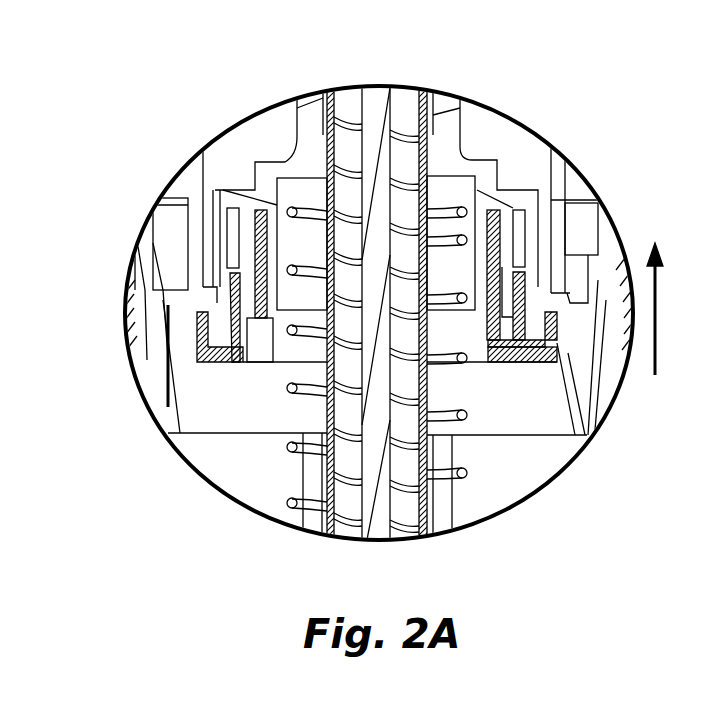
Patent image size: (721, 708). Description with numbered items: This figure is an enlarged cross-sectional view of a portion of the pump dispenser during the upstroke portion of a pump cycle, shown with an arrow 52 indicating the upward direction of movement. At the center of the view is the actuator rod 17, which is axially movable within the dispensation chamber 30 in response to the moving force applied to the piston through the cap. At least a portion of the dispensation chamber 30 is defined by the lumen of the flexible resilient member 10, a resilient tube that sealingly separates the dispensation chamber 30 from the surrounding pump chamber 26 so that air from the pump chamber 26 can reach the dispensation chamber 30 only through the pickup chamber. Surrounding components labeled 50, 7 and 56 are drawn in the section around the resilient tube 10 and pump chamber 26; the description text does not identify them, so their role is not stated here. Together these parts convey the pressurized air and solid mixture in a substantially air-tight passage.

The actuator rod 17 is at (370, 88).
The flexible resilient member (resilient tube) 10 is at (433, 147).
The spring housing 50 is at (212, 222).
The piston 7 is at (270, 238).
The seal base 56 is at (270, 268).
The pump chamber 26 is at (237, 468).
The dispensation chamber 30 is at (405, 510).
The direction of movement arrow 52 is at (656, 311).